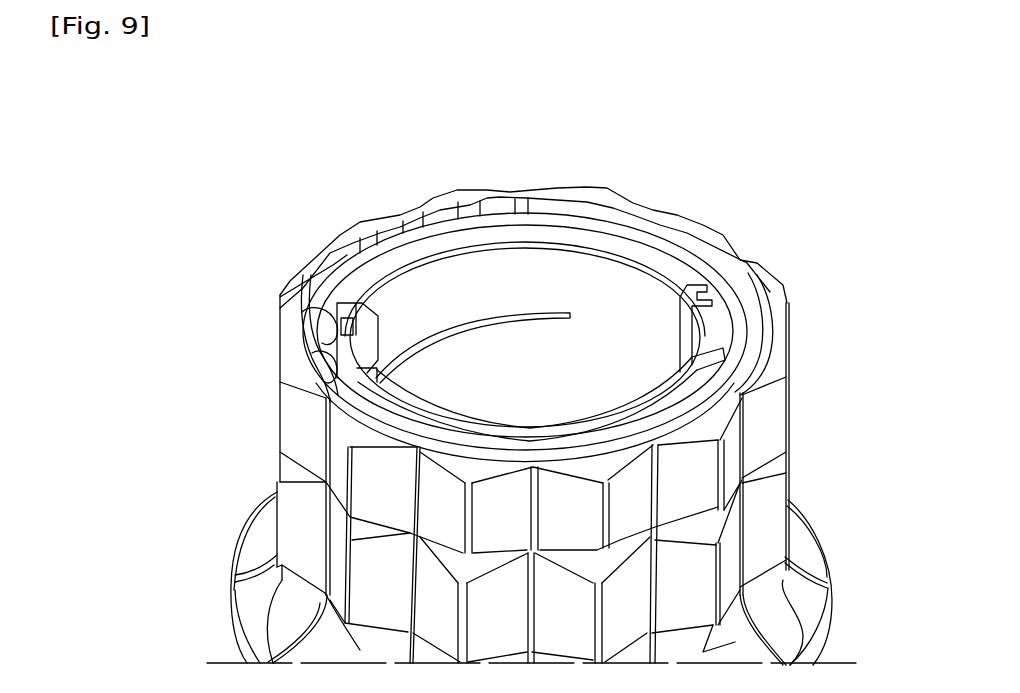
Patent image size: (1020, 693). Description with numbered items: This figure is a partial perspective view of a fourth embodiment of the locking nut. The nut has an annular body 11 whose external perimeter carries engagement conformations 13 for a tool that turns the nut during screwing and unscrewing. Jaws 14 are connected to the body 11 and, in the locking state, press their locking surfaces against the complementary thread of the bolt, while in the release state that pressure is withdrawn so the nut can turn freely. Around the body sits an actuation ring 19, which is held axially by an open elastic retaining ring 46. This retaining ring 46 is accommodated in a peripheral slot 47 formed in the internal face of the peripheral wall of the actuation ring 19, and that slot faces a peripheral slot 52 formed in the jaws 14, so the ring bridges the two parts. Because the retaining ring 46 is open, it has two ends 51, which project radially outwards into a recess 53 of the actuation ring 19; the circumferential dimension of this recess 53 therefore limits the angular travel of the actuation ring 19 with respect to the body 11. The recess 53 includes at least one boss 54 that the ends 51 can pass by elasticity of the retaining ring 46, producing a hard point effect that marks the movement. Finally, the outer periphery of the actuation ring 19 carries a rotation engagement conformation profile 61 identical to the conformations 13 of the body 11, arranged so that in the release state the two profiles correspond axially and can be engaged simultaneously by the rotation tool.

The annular body 11 is at (845, 563).
The engagement conformations 13 is at (760, 508).
The jaws 14 is at (573, 243).
The actuation ring 19 is at (800, 395).
The retaining ring 46 is at (320, 300).
The peripheral slot 47 is at (750, 343).
The ends 51 is at (323, 368).
The peripheral slot 52 is at (687, 283).
The recess 53 is at (395, 233).
The boss 54 is at (420, 220).
The rotation engagement conformation profile 61 is at (763, 417).